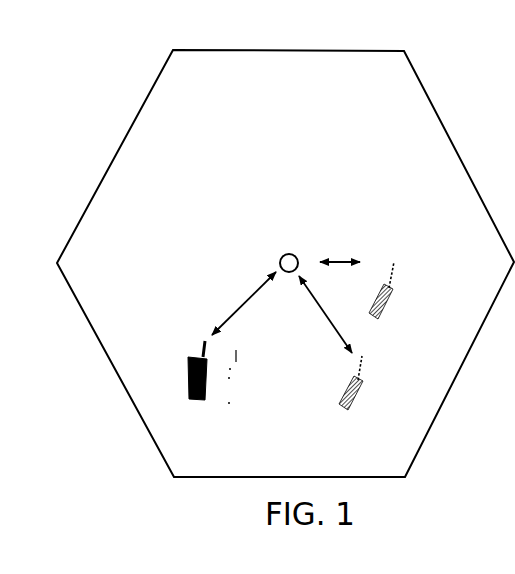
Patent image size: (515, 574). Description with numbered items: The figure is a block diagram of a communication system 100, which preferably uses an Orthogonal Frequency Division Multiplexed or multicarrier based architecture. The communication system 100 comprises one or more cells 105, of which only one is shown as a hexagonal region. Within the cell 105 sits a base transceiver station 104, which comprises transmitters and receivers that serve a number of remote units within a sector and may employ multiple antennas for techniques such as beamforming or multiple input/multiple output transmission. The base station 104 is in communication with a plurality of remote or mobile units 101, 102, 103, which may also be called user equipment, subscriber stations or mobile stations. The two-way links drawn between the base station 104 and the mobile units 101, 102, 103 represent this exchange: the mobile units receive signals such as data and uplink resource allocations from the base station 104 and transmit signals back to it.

The communication system 100 is at (285, 305).
The mobile unit 101 is at (385, 305).
The mobile unit 102 is at (355, 400).
The mobile unit 103 is at (200, 355).
The base transceiver station 104 is at (283, 257).
The cell 105 is at (452, 392).